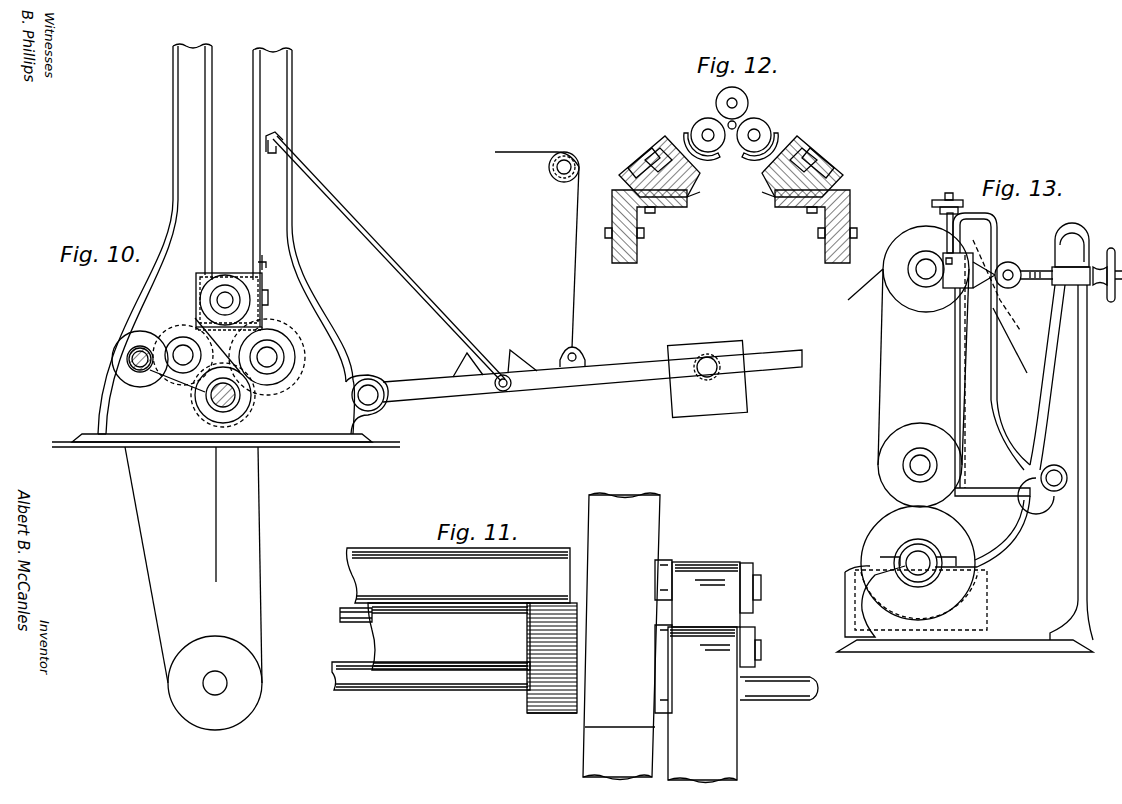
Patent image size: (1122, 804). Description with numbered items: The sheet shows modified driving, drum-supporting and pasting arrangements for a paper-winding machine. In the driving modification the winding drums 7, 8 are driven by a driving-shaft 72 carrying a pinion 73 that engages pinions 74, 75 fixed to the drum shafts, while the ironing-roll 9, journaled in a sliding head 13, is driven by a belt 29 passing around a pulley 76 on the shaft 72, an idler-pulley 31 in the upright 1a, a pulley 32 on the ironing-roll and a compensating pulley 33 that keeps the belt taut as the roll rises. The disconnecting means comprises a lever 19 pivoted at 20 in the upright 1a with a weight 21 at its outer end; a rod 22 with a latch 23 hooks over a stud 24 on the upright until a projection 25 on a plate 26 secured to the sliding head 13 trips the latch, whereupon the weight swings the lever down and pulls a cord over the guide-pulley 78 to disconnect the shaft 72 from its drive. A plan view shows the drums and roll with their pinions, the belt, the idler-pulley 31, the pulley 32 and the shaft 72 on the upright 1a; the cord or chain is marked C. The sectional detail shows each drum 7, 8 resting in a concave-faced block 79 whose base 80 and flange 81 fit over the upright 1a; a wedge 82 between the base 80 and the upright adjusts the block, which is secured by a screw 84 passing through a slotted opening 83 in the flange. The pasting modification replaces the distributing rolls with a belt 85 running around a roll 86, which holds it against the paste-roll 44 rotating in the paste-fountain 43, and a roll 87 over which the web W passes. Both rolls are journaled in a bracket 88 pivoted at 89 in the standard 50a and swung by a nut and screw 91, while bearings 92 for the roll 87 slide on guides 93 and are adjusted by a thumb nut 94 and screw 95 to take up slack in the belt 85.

In FIG. 10, the upright 1a is at (213, 407).
In FIG. 11, the upright 1a is at (627, 636).
In FIG. 10, the winding drum 7 is at (150, 340).
In FIG. 11, the winding drum 7 is at (449, 636).
In FIG. 12, the winding drum 7 is at (706, 128).
In FIG. 10, the winding drum 8 is at (290, 360).
In FIG. 12, the winding drum 8 is at (756, 128).
In FIG. 10, the ironing-roll 9 is at (226, 276).
In FIG. 11, the ironing-roll 9 is at (458, 575).
In FIG. 12, the ironing-roll 9 is at (744, 98).
In FIG. 10, the sliding head 13 is at (197, 282).
In FIG. 10, the lever 19 is at (627, 366).
In FIG. 10, the fulcrum 20 is at (374, 380).
In FIG. 10, the weight 21 is at (708, 378).
In FIG. 10, the rod 22 is at (420, 290).
In FIG. 10, the latch 23 is at (278, 136).
In FIG. 10, the stud 24 is at (266, 150).
In FIG. 10, the projection 25 is at (262, 258).
In FIG. 10, the plate 26 is at (262, 268).
In FIG. 10, the belt 29 is at (258, 508).
In FIG. 11, the belt 29 is at (704, 672).
In FIG. 10, the idler-pulley 31 is at (128, 363).
In FIG. 11, the idler-pulley 31 is at (745, 640).
In FIG. 10, the pulley 32 is at (243, 299).
In FIG. 11, the pulley 32 is at (746, 570).
In FIG. 10, the compensating pulley 33 is at (215, 683).
In FIG. 13, the paste-fountain 43 is at (845, 572).
In FIG. 13, the paste-roll 44 is at (861, 541).
In FIG. 13, the standard 50a is at (979, 437).
In FIG. 10, the driving-shaft 72 is at (215, 402).
In FIG. 11, the driving-shaft 72 is at (434, 690).
In FIG. 10, the pinion 73 is at (240, 415).
In FIG. 11, the pinion 73 is at (556, 713).
In FIG. 10, the pinion 74 is at (179, 343).
In FIG. 11, the pinion 74 is at (548, 616).
In FIG. 10, the pinion 75 is at (290, 345).
In FIG. 10, the pulley 76 is at (243, 400).
In FIG. 10, the guide-pulley 78 is at (560, 180).
In FIG. 12, the block 79 is at (686, 136).
In FIG. 12, the base 80 is at (731, 161).
In FIG. 12, the flange 81 is at (622, 182).
In FIG. 12, the wedge 82 is at (731, 191).
In FIG. 12, the opening 83 is at (634, 168).
In FIG. 12, the screw 84 is at (650, 154).
In FIG. 13, the belt 85 is at (880, 402).
In FIG. 13, the roll 86 is at (920, 465).
In FIG. 13, the roll 87 is at (908, 269).
In FIG. 13, the bracket 88 is at (992, 375).
In FIG. 13, the pivot 89 is at (1056, 468).
In FIG. 13, the screw 91 is at (1045, 279).
In FIG. 13, the bearing 92 is at (958, 270).
In FIG. 13, the guide 93 is at (965, 228).
In FIG. 13, the thumb nut 94 is at (958, 218).
In FIG. 13, the screw 95 is at (945, 195).
In FIG. 10, the cord C is at (268, 320).
In FIG. 11, the cord C is at (340, 614).
In FIG. 12, the cord C is at (738, 122).
In FIG. 10, the web W is at (216, 489).
In FIG. 13, the web W is at (1013, 340).